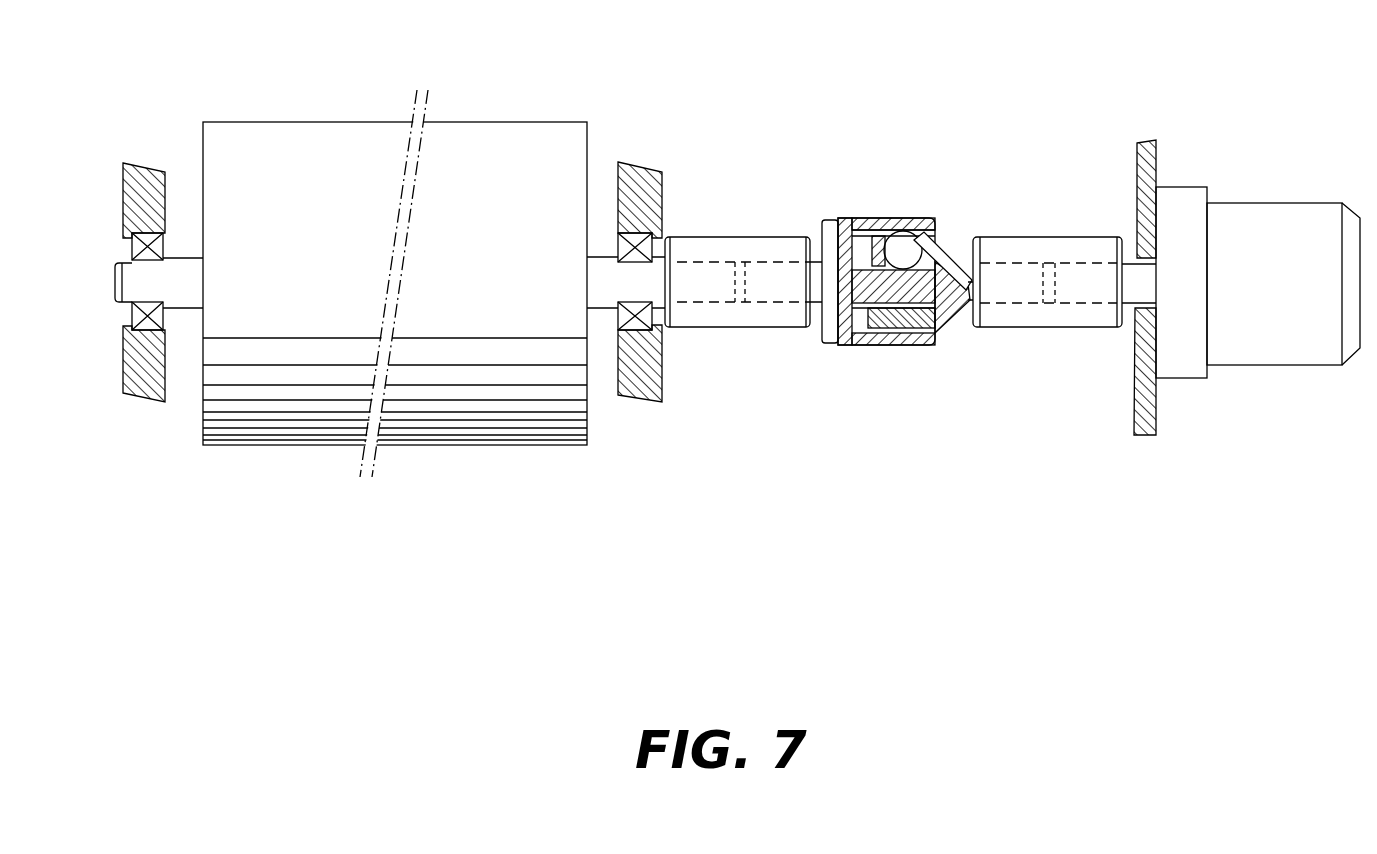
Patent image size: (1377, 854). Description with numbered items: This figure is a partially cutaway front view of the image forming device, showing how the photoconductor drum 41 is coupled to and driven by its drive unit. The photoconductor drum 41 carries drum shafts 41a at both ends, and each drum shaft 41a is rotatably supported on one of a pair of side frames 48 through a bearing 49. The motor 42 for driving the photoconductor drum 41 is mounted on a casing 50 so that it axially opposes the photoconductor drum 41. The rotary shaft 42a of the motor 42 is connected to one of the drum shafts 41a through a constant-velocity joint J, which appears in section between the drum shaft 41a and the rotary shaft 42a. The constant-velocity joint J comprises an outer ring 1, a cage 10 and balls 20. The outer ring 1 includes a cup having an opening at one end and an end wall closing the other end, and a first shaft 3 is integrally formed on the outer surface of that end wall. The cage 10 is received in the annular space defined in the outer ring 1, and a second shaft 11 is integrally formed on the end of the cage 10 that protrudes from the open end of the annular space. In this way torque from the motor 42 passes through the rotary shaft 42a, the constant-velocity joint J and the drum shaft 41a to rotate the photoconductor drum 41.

The outer ring 1 is at (842, 218).
The first shaft 3 is at (780, 288).
The constant-velocity joint J is at (888, 220).
The cage 10 is at (960, 245).
The second shaft 11 is at (1012, 273).
The balls 20 is at (910, 225).
The photoconductor drum 41 is at (292, 122).
The drum shaft 41a is at (130, 280).
The motor 42 is at (1303, 212).
The rotary shaft 42a is at (1130, 282).
The side frame 48 is at (140, 170).
The bearing 49 is at (132, 322).
The casing 50 is at (1138, 140).